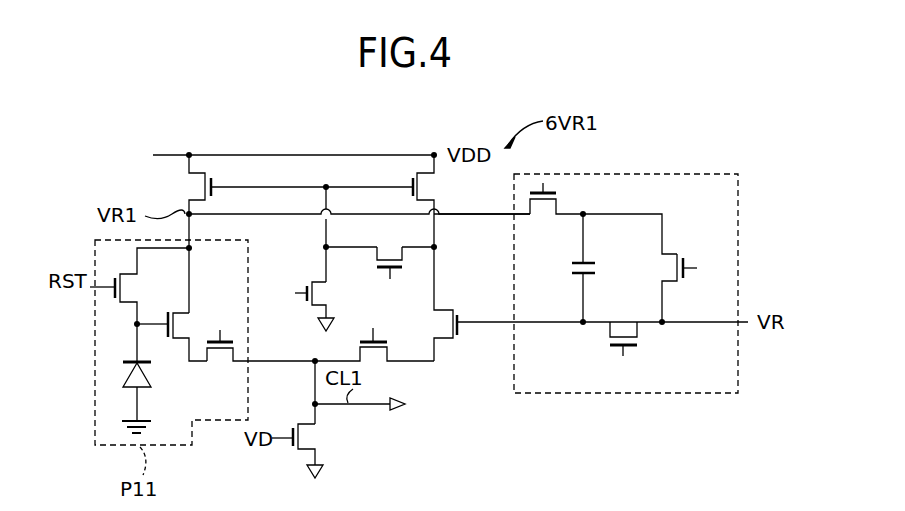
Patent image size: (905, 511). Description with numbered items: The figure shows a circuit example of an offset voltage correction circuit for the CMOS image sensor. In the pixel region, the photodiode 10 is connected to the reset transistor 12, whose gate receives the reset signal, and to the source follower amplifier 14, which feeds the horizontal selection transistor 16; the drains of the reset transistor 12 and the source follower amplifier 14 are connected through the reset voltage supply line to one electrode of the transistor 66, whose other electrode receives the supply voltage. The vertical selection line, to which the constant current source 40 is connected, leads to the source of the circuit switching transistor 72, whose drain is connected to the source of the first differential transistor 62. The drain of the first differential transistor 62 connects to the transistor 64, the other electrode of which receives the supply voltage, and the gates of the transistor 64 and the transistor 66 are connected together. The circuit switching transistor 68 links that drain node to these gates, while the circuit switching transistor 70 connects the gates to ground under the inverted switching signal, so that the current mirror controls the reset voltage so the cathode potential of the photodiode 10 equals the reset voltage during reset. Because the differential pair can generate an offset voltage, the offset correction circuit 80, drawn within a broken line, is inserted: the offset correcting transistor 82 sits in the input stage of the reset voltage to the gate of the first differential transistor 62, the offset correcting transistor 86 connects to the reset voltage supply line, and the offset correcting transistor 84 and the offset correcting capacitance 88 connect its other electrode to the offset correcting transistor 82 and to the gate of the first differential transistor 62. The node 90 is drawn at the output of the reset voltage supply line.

The photodiode 10 is at (120, 375).
The reset transistor 12 is at (118, 304).
The source follower amplifier 14 is at (185, 324).
The horizontal selection transistor 16 is at (218, 365).
The constant current source 40 is at (322, 440).
The first differential transistor 62 is at (458, 310).
The transistor 64 is at (445, 186).
The transistor 66 is at (187, 184).
The circuit switching transistor 68 is at (394, 272).
The circuit switching transistor 70 is at (325, 294).
The circuit switching transistor 72 is at (372, 365).
The offset correction circuit 80 is at (715, 172).
The offset correcting transistor 82 is at (626, 357).
The offset correcting transistor 84 is at (692, 262).
The offset correcting transistor 86 is at (545, 217).
The offset correcting capacitance 88 is at (598, 268).
The node 90 is at (482, 216).